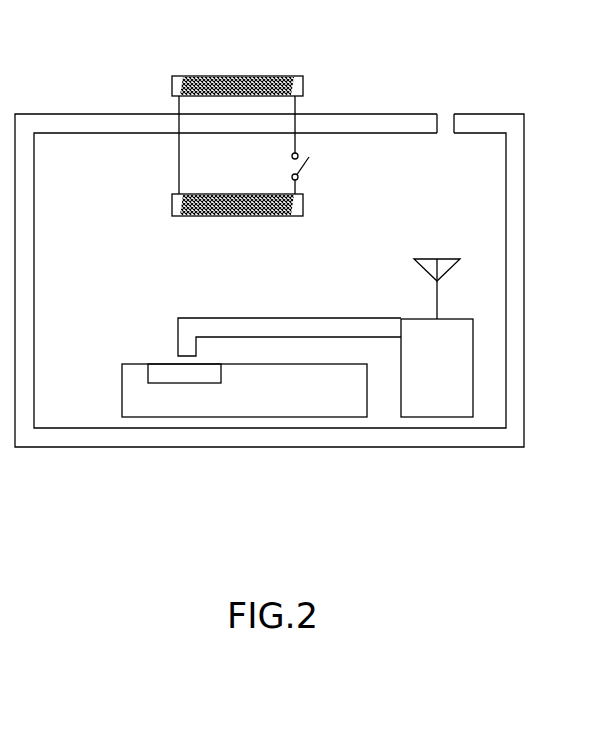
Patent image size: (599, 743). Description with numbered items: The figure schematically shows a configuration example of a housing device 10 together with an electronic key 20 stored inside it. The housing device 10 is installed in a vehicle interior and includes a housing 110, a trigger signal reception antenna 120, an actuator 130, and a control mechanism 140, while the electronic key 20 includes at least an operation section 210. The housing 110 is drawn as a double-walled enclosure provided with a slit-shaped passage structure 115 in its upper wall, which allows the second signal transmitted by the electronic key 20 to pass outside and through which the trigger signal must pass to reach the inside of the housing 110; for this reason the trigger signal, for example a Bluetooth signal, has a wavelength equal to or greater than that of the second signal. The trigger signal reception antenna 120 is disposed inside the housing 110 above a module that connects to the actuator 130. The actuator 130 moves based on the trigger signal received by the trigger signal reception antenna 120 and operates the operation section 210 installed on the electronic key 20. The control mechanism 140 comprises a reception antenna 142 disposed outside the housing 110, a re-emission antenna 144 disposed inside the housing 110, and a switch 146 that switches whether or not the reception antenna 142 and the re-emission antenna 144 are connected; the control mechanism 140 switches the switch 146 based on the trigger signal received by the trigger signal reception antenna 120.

The housing device 10 is at (283, 504).
The electronic key 20 is at (211, 360).
The housing 110 is at (55, 98).
The passage structure 115 is at (443, 108).
The trigger signal reception antenna 120 is at (400, 255).
The actuator 130 is at (200, 303).
The control mechanism 140 is at (241, 113).
The reception antenna 142 is at (220, 65).
The re-emission antenna 144 is at (165, 198).
The switch 146 is at (322, 165).
The operation section 210 is at (162, 358).